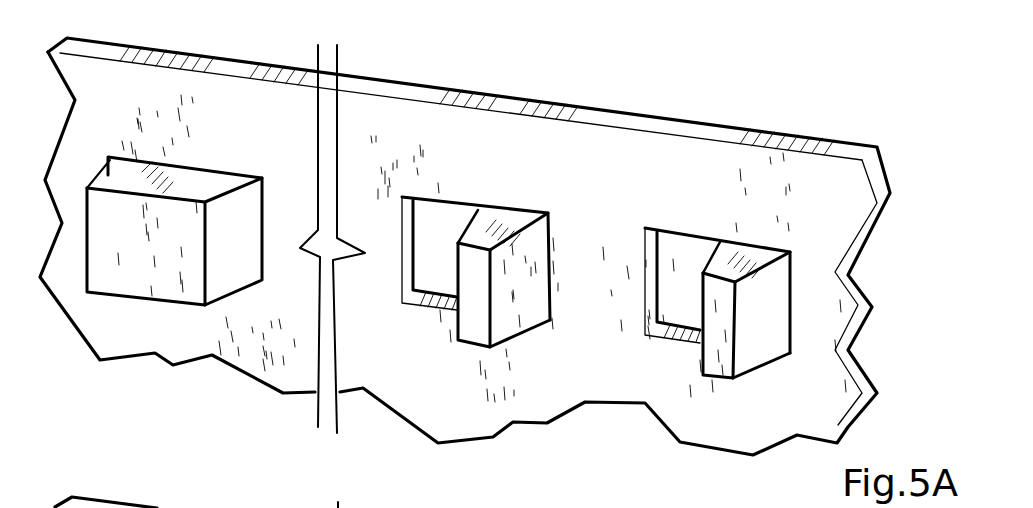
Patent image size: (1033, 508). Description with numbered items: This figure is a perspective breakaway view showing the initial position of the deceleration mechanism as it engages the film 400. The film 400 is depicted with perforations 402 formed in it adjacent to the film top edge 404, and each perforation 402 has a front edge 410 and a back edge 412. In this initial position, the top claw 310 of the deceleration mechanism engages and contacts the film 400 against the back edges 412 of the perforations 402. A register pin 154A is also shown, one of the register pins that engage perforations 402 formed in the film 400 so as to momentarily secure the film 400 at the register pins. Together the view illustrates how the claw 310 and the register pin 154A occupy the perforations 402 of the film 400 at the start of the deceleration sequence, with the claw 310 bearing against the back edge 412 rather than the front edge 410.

The register pin 154A is at (167, 213).
The top claw 310 is at (713, 237).
The film 400 is at (886, 164).
The perforation 402 is at (425, 195).
The film top edge 404 is at (597, 108).
The front edge 410 is at (650, 302).
The back edge 412 is at (553, 260).